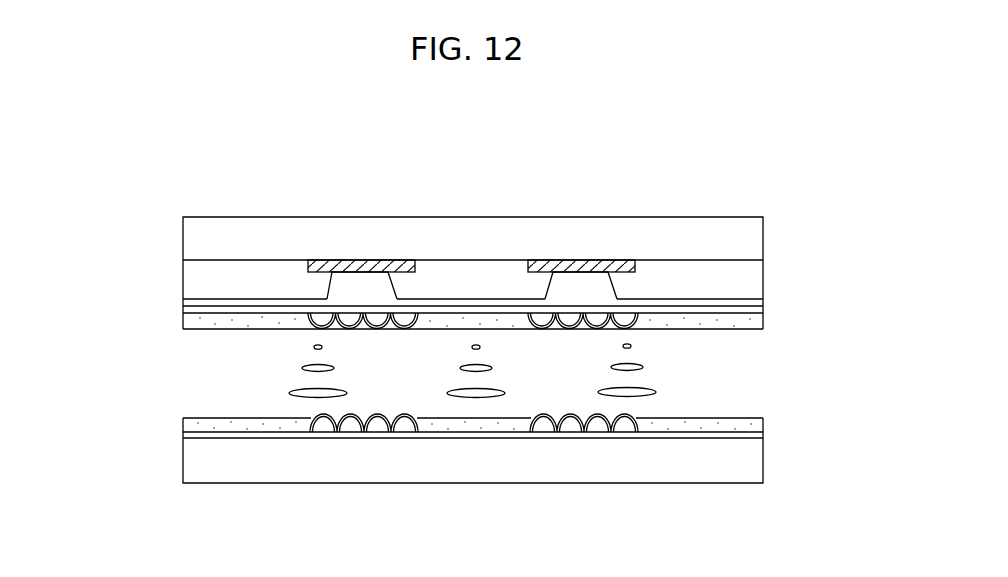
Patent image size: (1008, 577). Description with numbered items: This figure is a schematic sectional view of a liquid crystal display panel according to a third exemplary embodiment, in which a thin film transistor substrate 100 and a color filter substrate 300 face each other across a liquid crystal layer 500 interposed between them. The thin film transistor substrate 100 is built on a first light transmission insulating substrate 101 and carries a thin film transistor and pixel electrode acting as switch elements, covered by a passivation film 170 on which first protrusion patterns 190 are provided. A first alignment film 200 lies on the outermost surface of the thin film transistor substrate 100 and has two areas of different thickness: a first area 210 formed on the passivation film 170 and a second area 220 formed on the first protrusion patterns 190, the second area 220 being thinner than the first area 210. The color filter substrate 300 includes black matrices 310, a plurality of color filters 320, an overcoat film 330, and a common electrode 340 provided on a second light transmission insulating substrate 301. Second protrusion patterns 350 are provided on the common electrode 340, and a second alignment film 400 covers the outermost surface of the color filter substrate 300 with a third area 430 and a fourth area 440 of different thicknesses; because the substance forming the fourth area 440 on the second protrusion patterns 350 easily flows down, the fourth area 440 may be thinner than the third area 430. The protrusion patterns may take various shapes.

The thin film transistor substrate 100 is at (168, 494).
The first light transmission insulating substrate 101 is at (763, 463).
The passivation film 170 is at (763, 436).
The first protrusion patterns 190 is at (570, 427).
The first alignment film 200 is at (835, 378).
The first area 210 is at (763, 419).
The second area 220 is at (622, 412).
The color filter substrate 300 is at (168, 202).
The second light transmission insulating substrate 301 is at (763, 232).
The black matrices 310 is at (363, 265).
The color filters 320 is at (225, 268).
The overcoat film 330 is at (183, 299).
The common electrode 340 is at (183, 311).
The second protrusion patterns 350 is at (322, 318).
The second alignment film 400 is at (835, 318).
The third area 430 is at (763, 325).
The fourth area 440 is at (624, 330).
The liquid crystal layer 500 is at (282, 370).